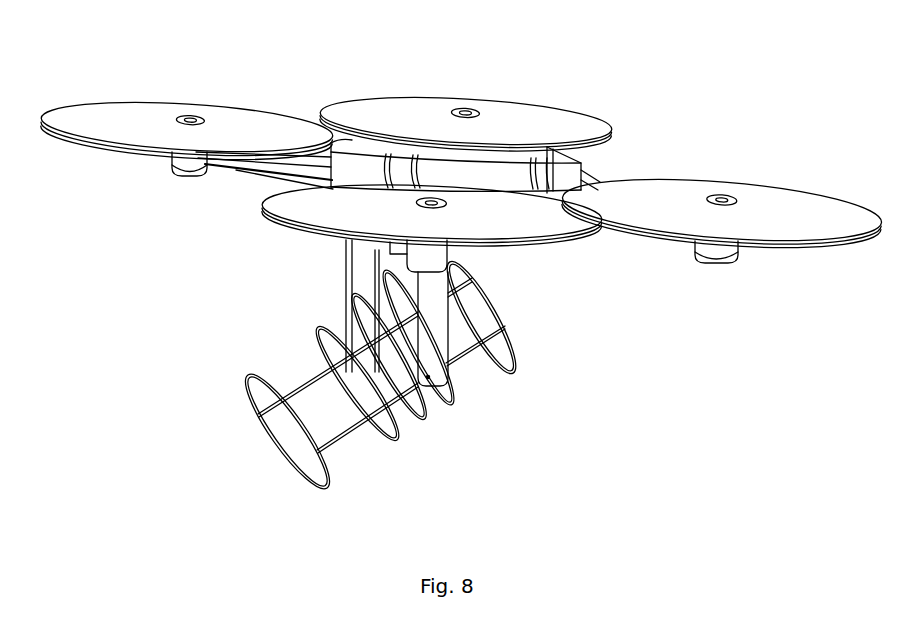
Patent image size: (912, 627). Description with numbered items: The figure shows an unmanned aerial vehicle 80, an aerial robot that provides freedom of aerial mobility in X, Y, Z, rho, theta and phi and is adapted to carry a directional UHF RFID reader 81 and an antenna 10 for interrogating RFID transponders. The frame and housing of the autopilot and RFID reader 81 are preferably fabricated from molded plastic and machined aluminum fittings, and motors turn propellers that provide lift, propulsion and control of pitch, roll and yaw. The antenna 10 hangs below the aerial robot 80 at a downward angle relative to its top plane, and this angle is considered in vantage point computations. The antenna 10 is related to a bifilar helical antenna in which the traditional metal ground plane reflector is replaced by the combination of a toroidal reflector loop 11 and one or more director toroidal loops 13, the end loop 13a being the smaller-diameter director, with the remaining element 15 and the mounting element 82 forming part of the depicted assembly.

The unmanned aerial vehicle 80 is at (100, 95).
The directional UHF RFID reader 81 is at (573, 173).
The mounting plate 82 is at (430, 347).
The antenna 10 is at (235, 448).
The toroidal reflector loop 11 is at (497, 310).
The director toroidal loop 13 is at (318, 342).
The end coil loop 13a is at (248, 392).
The coil loop end ring 15 is at (453, 403).